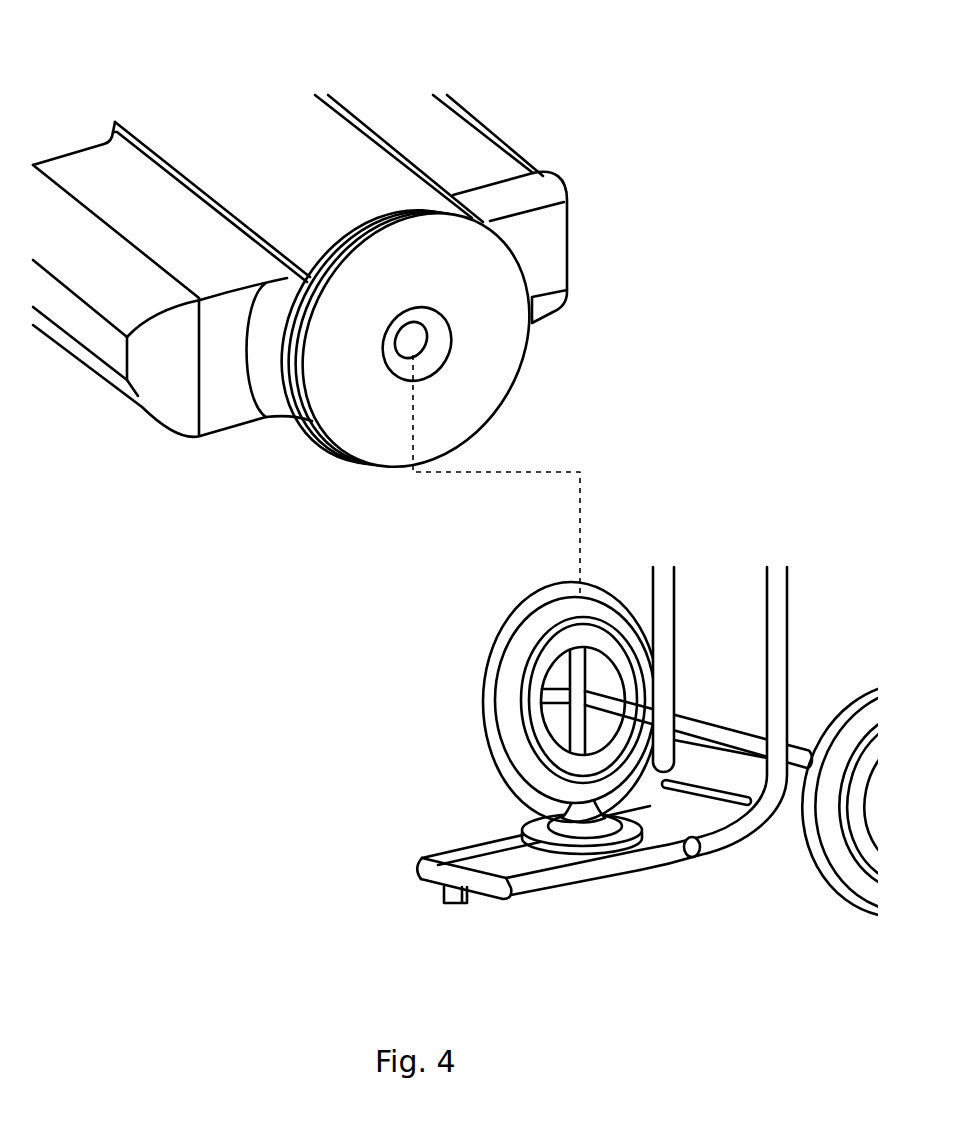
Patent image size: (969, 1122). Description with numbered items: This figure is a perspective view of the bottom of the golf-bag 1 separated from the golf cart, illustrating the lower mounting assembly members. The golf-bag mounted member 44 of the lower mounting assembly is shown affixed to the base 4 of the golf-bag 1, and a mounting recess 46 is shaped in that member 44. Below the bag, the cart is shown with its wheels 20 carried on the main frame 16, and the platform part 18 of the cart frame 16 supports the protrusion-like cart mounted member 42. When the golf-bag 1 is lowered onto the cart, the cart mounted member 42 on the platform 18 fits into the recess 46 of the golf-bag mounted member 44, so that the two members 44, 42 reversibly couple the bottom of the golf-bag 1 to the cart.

The golf-bag 1 is at (280, 158).
The base component of golf-bag 4 is at (277, 390).
The golf-bag mounted member of lower mounting assembly 44 is at (495, 320).
The recess in golf-bag mounted member of lower mounting assembly 46 is at (433, 347).
The wheels of golf cart 20 is at (603, 600).
The main frame of golf cart 16 is at (750, 823).
The platform part of golf cart 18 is at (603, 867).
The cart mounted member of lower mounting assembly 42 is at (580, 805).